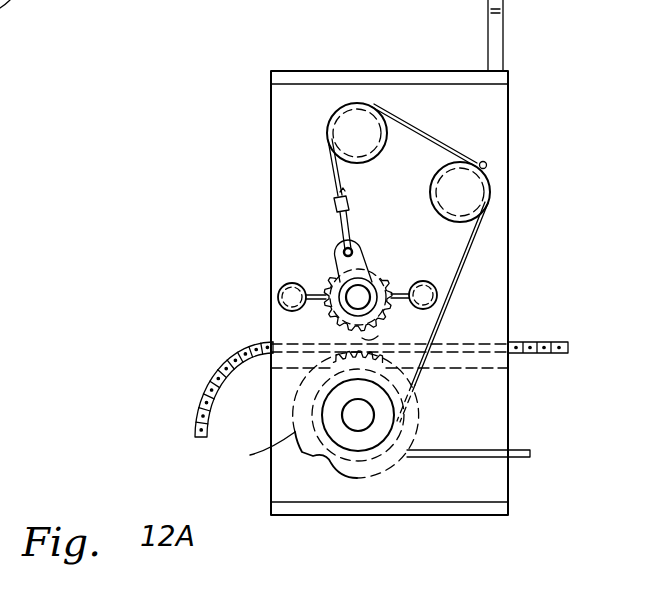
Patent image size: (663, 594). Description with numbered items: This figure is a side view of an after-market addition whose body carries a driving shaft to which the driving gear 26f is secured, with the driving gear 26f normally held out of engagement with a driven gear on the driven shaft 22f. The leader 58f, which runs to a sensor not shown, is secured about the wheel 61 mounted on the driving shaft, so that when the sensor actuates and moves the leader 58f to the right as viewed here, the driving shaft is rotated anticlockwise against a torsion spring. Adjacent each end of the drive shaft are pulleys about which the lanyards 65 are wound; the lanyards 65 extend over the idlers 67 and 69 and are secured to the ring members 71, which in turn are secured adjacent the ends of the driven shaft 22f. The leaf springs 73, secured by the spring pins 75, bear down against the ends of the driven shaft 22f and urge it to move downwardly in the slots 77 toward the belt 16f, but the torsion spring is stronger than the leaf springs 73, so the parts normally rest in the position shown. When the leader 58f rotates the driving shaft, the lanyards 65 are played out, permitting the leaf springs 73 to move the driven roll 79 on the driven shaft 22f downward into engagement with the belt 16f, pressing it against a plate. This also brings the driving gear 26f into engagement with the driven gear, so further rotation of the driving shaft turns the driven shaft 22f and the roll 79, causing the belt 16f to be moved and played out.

The idler 69 is at (328, 126).
The idler 67 is at (431, 184).
The lanyard 65 is at (471, 249).
The ring member 71 is at (366, 244).
The leaf spring 73 is at (316, 290).
The spring pin 75 is at (278, 296).
The driven shaft 22f is at (340, 301).
The slot 77 is at (372, 338).
The belt 16f is at (195, 418).
The driving gear 26f is at (251, 451).
The wheel 61 is at (410, 432).
The leader 58f is at (523, 449).
The driven roll 79 is at (330, 470).